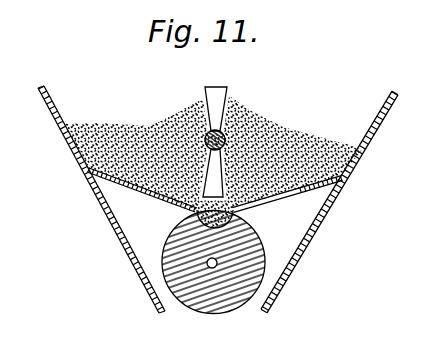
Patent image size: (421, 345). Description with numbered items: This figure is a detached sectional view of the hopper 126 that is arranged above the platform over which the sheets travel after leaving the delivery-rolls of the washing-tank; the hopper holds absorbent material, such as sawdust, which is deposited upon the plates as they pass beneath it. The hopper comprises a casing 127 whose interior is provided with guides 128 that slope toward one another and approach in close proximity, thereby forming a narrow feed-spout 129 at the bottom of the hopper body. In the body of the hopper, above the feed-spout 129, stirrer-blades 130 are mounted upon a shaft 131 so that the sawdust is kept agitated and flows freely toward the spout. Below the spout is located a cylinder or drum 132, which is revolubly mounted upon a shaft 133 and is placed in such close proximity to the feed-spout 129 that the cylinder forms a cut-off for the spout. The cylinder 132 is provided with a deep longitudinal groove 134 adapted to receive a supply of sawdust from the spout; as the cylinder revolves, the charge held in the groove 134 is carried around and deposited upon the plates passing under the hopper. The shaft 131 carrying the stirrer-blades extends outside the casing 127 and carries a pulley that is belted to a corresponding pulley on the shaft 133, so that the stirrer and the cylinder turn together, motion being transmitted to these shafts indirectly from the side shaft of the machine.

The hopper 126 is at (101, 199).
The casing 127 is at (313, 240).
The guides 128 is at (293, 190).
The feed-spout 129 is at (197, 214).
The stirrer-blades 130 is at (221, 101).
The shaft 131 is at (226, 134).
The cylinder or drum 132 is at (249, 252).
The shaft 133 is at (207, 264).
The longitudinal groove 134 is at (242, 219).